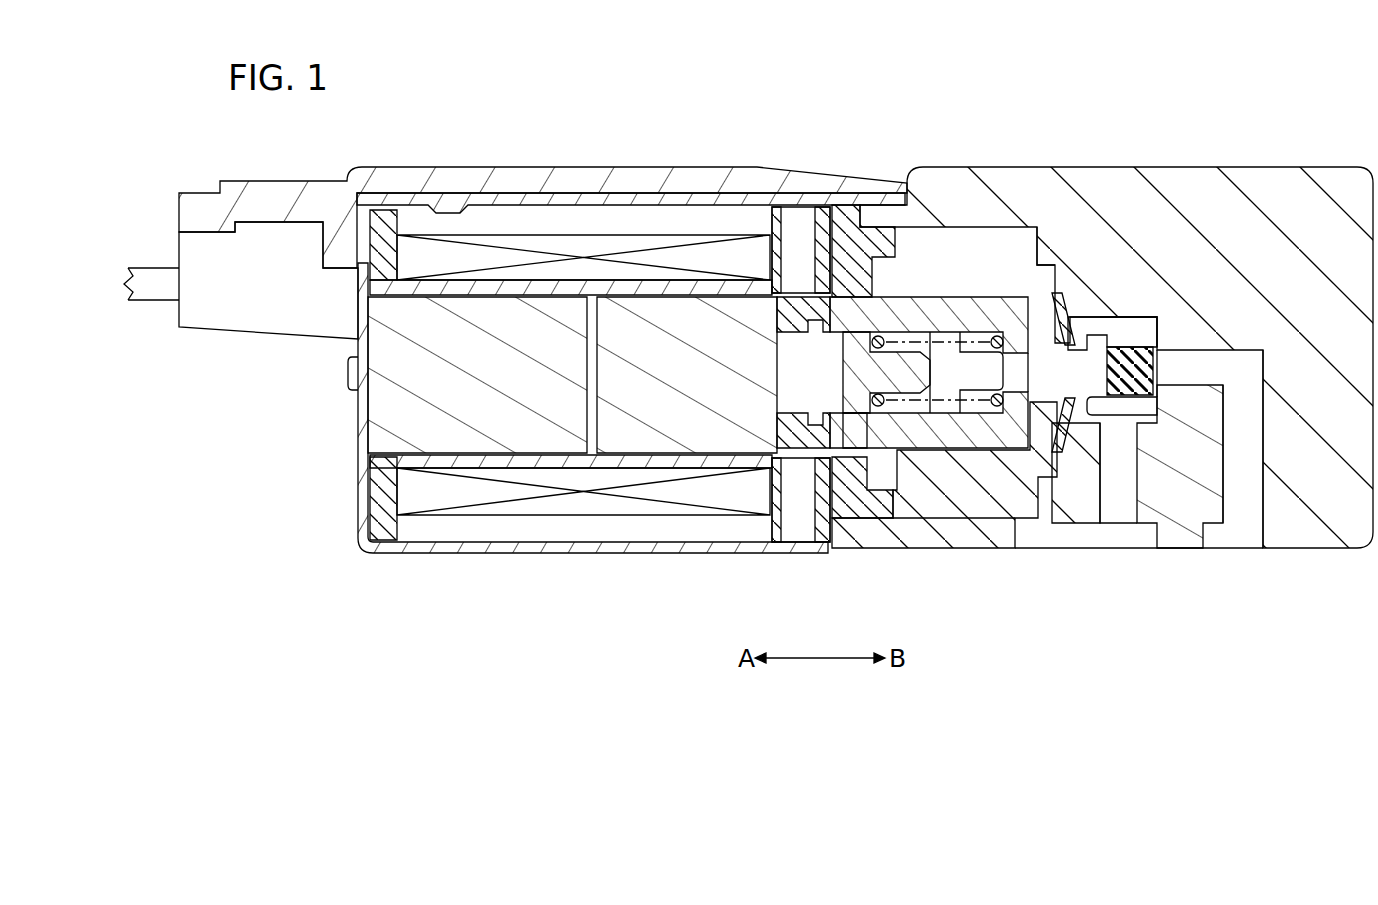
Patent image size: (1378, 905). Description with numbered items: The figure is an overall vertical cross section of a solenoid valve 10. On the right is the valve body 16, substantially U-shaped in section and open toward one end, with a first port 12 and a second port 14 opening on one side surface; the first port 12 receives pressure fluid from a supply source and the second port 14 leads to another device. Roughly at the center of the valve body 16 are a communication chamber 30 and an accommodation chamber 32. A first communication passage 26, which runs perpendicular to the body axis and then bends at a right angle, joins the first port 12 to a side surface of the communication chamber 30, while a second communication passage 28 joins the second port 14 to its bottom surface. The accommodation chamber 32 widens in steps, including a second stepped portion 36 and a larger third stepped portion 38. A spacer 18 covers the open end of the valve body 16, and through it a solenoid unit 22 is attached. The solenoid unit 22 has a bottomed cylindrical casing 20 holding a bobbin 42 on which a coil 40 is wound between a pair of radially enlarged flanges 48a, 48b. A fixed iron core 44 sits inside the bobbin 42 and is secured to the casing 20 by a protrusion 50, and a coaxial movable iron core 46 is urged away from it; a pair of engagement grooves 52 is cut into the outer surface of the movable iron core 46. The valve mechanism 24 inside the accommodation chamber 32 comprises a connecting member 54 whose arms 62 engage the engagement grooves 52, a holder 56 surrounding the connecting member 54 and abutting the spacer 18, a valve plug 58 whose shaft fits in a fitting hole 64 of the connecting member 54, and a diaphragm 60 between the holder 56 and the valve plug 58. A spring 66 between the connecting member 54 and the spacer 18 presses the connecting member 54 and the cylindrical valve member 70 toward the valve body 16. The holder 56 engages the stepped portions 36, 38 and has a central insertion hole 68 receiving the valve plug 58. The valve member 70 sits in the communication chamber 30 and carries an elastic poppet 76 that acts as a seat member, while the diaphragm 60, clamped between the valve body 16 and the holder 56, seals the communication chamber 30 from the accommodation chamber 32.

The solenoid valve 10 is at (661, 105).
The first port 12 is at (1250, 537).
The second port 14 is at (1112, 542).
The valve body 16 is at (1298, 159).
The spacer 18 is at (848, 240).
The casing 20 is at (545, 545).
The solenoid unit 22 is at (396, 565).
The valve mechanism 24 is at (1093, 315).
The first communication passage 26 is at (1258, 441).
The second communication passage 28 is at (1132, 480).
The communication chamber 30 is at (1132, 318).
The accommodation chamber 32 is at (958, 505).
The second stepped portion 36 is at (1055, 300).
The third stepped portion 38 is at (1022, 226).
The coil 40 is at (548, 243).
The bobbin 42 is at (465, 288).
The fixed iron core 44 is at (388, 426).
The movable iron core 46 is at (695, 432).
The flange 48a is at (385, 208).
The flange 48b is at (770, 272).
The protrusion 50 is at (350, 378).
The engagement groove 52 is at (793, 330).
The connecting member 54 is at (942, 296).
The holder 56 is at (907, 514).
The valve plug 58 is at (1167, 343).
The diaphragm 60 is at (1077, 456).
The arm 62 is at (853, 440).
The fitting hole 64 is at (990, 368).
The spring 66 is at (888, 335).
The insertion hole 68 is at (1022, 372).
The valve member 70 is at (1116, 415).
The poppet 76 is at (1155, 372).